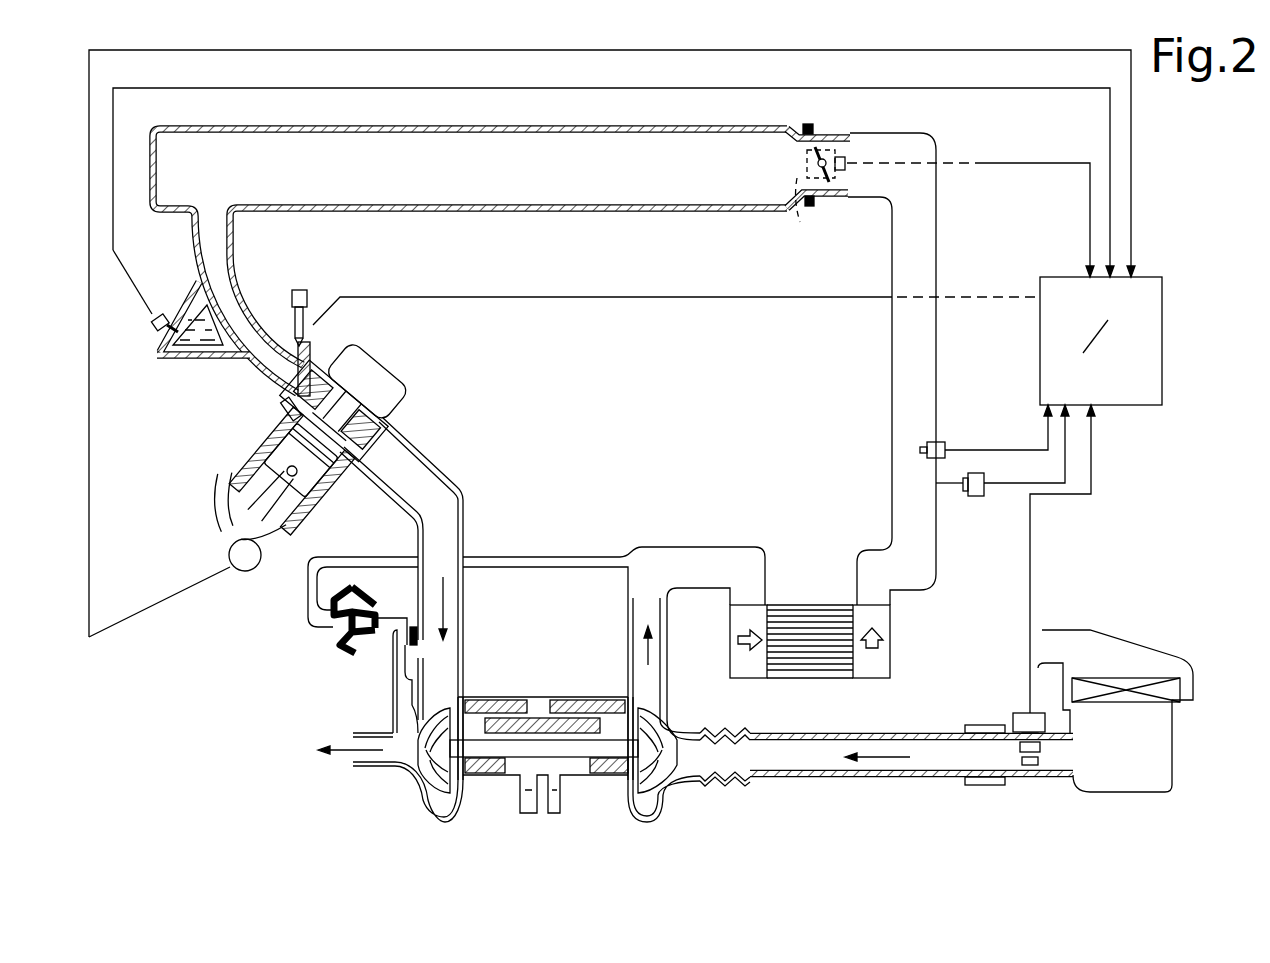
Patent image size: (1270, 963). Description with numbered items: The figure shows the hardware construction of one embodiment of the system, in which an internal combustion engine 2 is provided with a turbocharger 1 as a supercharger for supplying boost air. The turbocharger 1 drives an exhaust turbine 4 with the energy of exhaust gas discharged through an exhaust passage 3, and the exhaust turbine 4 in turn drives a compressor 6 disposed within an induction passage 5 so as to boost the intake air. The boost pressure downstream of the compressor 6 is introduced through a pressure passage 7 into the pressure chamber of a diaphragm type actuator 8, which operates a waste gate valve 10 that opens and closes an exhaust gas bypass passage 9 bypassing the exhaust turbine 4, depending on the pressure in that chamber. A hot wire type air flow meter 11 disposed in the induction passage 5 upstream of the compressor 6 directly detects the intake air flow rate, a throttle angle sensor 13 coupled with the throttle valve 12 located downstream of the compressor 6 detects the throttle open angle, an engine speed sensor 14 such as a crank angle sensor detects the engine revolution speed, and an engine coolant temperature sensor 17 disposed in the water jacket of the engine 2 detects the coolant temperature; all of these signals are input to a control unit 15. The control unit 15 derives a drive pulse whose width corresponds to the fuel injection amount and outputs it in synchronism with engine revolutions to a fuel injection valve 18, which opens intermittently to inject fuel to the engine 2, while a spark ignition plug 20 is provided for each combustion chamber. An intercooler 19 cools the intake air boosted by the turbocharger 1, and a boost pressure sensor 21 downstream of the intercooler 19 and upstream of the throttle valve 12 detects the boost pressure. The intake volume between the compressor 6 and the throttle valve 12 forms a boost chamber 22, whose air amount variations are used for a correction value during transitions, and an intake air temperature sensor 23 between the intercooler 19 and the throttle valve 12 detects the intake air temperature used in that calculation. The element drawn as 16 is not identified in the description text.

The turbocharger 1 is at (513, 788).
The internal combustion engine 2 is at (402, 365).
The exhaust passage 3 is at (464, 600).
The exhaust turbine 4 is at (440, 780).
The induction passage 5 is at (628, 627).
The compressor 6 is at (670, 790).
The pressure passage 7 is at (520, 555).
The diaphragm type actuator 8 is at (338, 638).
The exhaust gas bypass passage 9 is at (404, 692).
The waste gate valve 10 is at (430, 660).
The hot wire type air flow meter 11 is at (1022, 712).
The throttle valve 12 is at (835, 182).
The throttle angle sensor 13 is at (800, 199).
The engine speed sensor 14 is at (232, 545).
The control unit 15 is at (1163, 302).
The fuel reservoir 16 is at (196, 362).
The engine coolant temperature sensor 17 is at (160, 315).
The fuel injection valve 18 is at (300, 289).
The intercooler 19 is at (827, 668).
The spark ignition plug 20 is at (286, 416).
The boost pressure sensor 21 is at (974, 497).
The boost chamber 22 is at (891, 395).
The intake air temperature sensor 23 is at (946, 441).